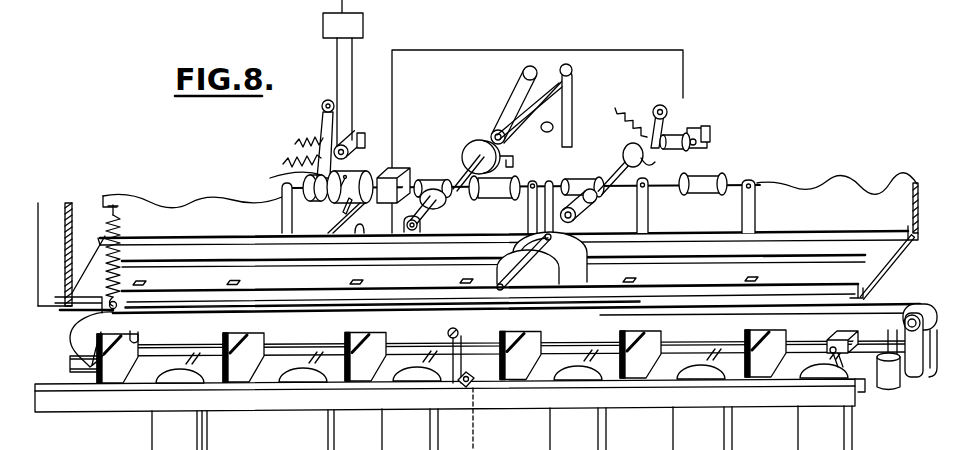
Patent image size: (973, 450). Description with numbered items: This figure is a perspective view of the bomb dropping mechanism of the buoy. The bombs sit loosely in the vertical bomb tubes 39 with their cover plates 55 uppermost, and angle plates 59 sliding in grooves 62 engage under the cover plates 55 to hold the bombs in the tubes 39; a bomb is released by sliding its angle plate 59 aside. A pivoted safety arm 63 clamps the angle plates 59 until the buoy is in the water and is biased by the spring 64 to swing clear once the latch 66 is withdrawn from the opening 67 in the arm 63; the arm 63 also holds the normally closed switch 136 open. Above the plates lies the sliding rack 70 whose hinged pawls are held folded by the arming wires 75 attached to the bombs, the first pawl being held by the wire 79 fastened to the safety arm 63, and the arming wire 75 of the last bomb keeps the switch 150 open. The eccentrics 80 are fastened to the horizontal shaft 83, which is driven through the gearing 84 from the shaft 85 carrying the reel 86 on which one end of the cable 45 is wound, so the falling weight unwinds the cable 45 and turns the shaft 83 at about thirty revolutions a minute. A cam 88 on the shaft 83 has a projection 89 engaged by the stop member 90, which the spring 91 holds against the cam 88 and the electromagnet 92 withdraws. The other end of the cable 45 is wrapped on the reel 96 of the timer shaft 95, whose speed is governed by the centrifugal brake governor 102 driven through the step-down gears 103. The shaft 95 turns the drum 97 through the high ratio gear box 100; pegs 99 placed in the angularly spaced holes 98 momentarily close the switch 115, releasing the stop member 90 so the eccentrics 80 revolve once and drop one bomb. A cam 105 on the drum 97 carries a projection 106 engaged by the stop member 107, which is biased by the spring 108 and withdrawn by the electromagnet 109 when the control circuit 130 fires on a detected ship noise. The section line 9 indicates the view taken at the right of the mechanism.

The control circuit 130 is at (364, 27).
The electromagnet 109 is at (350, 133).
The stop member 107 is at (322, 133).
The spring 108 is at (298, 144).
The projection 106 is at (284, 164).
The cam 105 is at (284, 177).
The drum 97 is at (364, 178).
The holes 98 is at (343, 181).
The peg 99 is at (343, 206).
The switch 115 is at (361, 224).
The gear box 100 is at (409, 175).
The step-down gears 103 is at (428, 200).
The centrifugal brake governor 102 is at (479, 145).
The shaft 95 is at (460, 197).
The reel 96 is at (504, 178).
The cable 45 is at (491, 203).
The horizontal shaft 83 is at (616, 172).
The gearing 84 is at (597, 198).
The cam 88 is at (622, 153).
The projection 89 is at (649, 163).
The stop member 90 is at (697, 128).
The spring 91 is at (627, 127).
The electromagnet 92 is at (700, 150).
The reel 86 is at (706, 176).
The horizontal shaft 85 is at (737, 177).
The eccentrics 80 is at (586, 252).
The spring 64 is at (107, 254).
The safety arm 63 is at (75, 333).
The grooves 62 is at (70, 363).
The wire 79 is at (133, 325).
The arming wires 75 is at (190, 364).
The angle plates 59 is at (441, 356).
The cover plate 55 is at (156, 378).
The bomb tubes 39 is at (285, 428).
The opening 67 is at (458, 330).
The latch 66 is at (455, 385).
The switch 150 is at (862, 322).
The switch 136 is at (899, 388).
The sliding rack 70 is at (888, 263).
The section line 9 is at (696, 92).